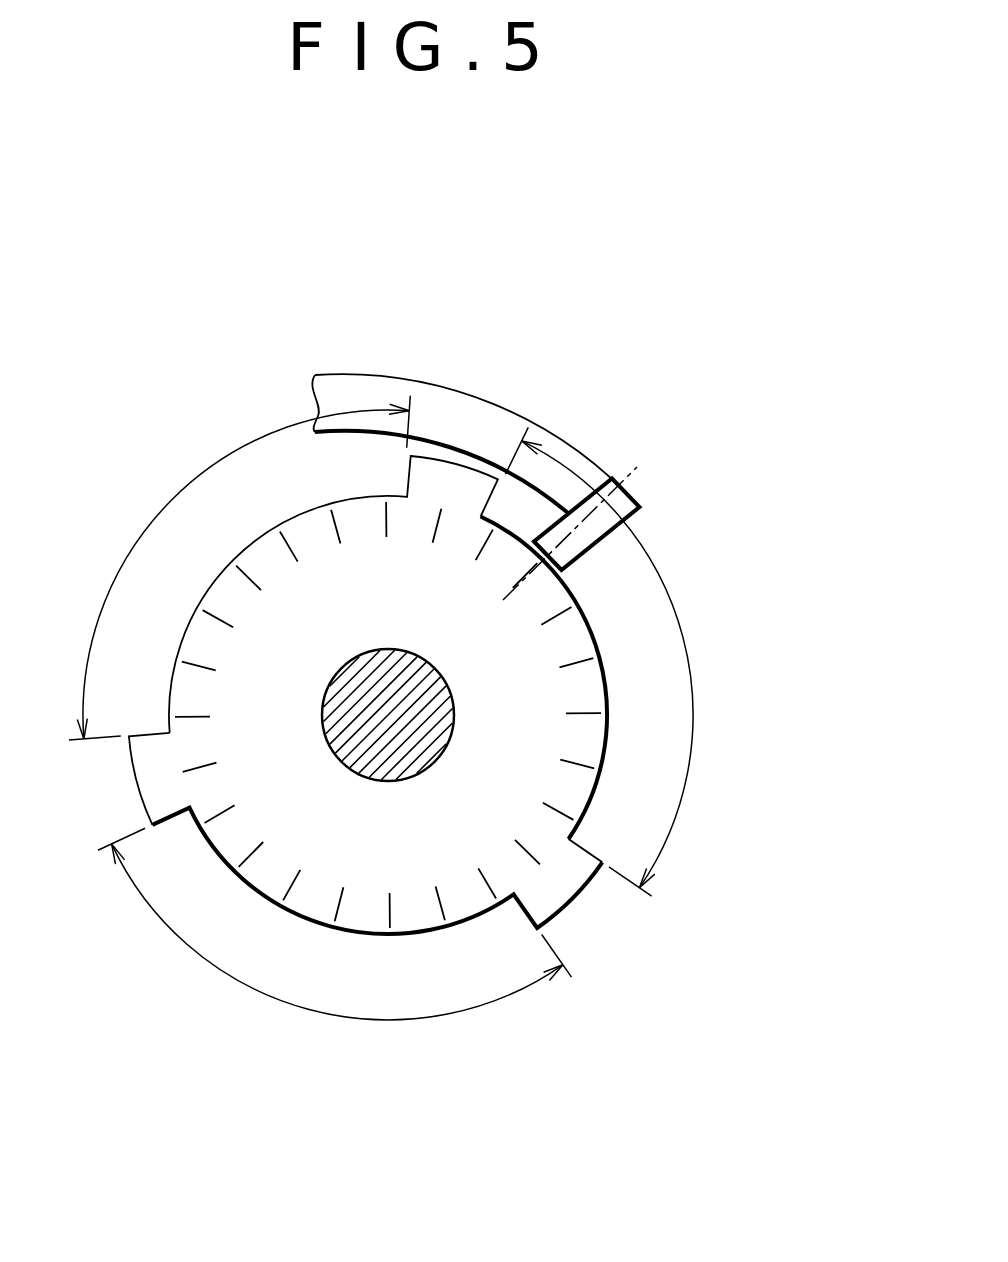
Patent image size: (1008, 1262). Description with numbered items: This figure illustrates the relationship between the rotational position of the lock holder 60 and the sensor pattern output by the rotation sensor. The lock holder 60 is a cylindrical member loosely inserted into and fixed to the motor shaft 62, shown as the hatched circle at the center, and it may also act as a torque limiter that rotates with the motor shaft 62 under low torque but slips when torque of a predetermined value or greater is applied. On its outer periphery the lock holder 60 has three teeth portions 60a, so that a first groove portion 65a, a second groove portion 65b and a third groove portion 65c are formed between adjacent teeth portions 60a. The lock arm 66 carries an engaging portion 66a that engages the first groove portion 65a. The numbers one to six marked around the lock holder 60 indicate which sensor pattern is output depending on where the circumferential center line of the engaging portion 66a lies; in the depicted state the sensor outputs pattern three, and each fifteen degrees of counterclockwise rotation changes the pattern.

The lock holder 60 is at (607, 673).
The teeth portions 60a is at (578, 900).
The motor shaft 62 is at (430, 760).
The lock arm 66 is at (464, 393).
The engaging portion 66a is at (604, 540).
The first groove portion 65a is at (628, 661).
The second groove portion 65b is at (335, 944).
The third groove portion 65c is at (239, 568).